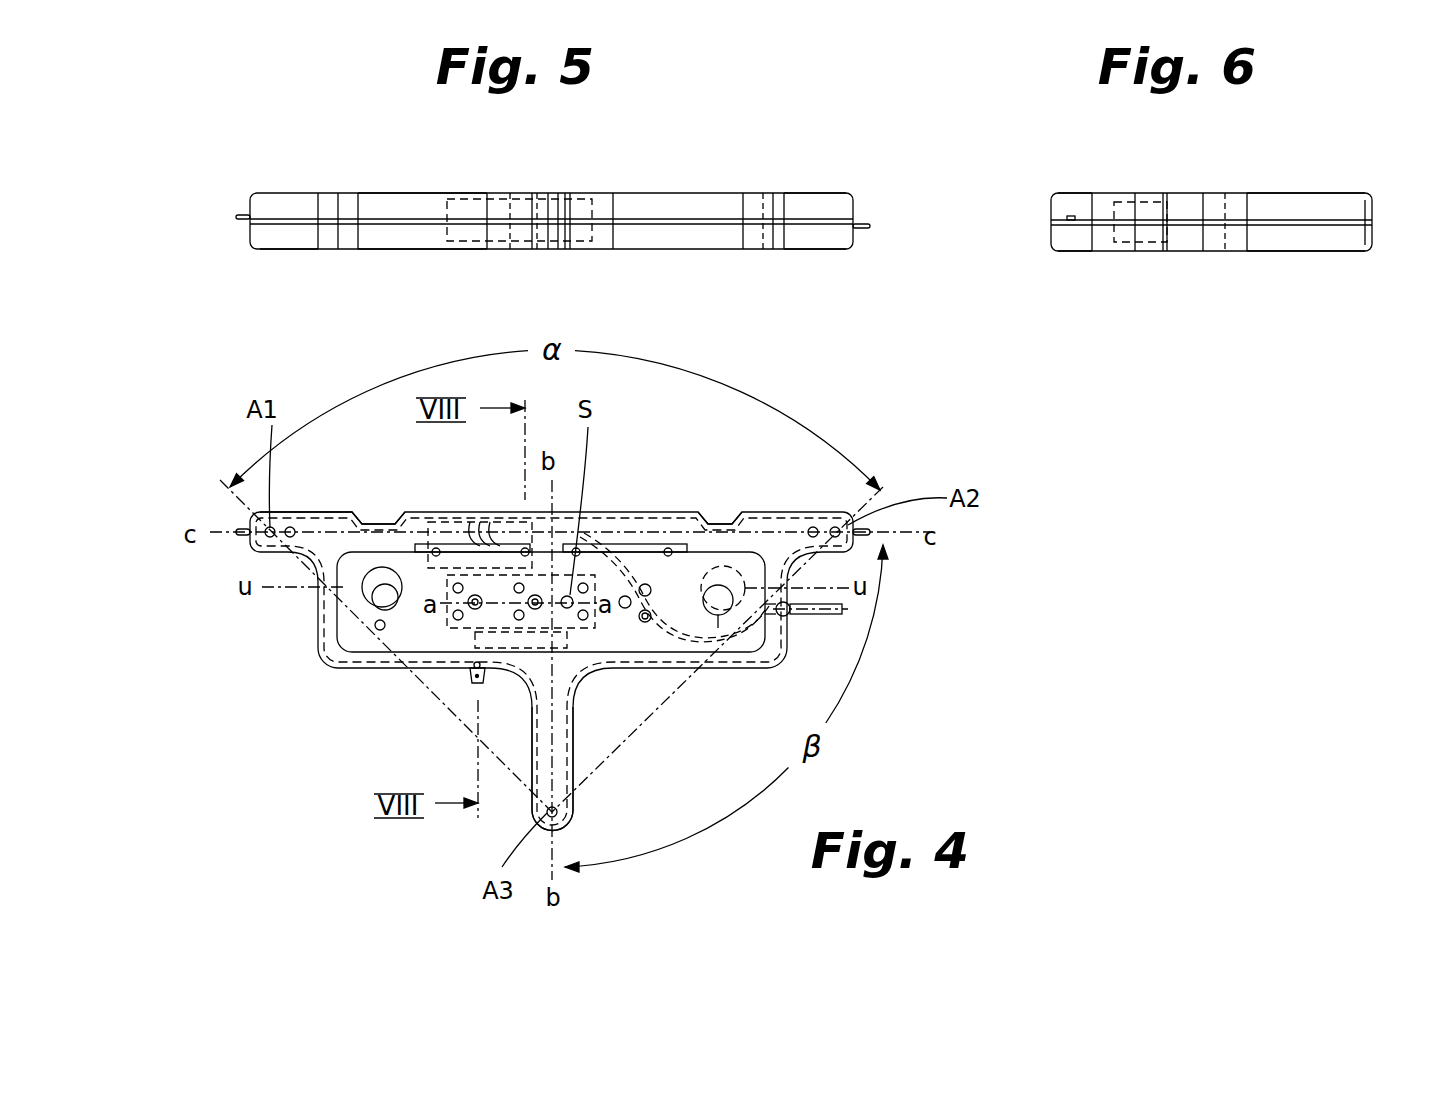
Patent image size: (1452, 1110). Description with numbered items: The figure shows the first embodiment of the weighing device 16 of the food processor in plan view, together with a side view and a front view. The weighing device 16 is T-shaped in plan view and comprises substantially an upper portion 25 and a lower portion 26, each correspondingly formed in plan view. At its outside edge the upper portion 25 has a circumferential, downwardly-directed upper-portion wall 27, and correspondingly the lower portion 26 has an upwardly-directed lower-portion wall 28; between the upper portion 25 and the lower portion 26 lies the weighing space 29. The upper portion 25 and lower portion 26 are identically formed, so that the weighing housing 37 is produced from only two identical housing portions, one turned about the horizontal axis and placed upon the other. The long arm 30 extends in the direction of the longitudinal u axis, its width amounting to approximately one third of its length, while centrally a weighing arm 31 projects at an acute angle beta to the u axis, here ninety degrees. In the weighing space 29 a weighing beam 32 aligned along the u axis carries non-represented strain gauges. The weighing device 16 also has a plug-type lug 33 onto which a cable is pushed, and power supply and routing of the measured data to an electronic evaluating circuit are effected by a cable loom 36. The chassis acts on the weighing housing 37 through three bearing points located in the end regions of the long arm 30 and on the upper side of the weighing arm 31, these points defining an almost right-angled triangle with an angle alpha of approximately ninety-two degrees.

In FIG. 5, the weighing device 16 is at (771, 173).
In FIG. 6, the weighing device 16 is at (1065, 174).
In FIG. 4, the weighing device 16 is at (768, 488).
In FIG. 5, the upper portion 25 is at (283, 203).
In FIG. 6, the upper portion 25 is at (1318, 200).
In FIG. 4, the upper portion 25 is at (335, 520).
In FIG. 5, the lower portion 26 is at (292, 235).
In FIG. 6, the lower portion 26 is at (1333, 247).
In FIG. 5, the upper-portion wall 27 is at (408, 207).
In FIG. 6, the upper-portion wall 27 is at (1260, 208).
In FIG. 4, the upper-portion wall 27 is at (613, 520).
In FIG. 5, the lower-portion wall 28 is at (410, 235).
In FIG. 6, the lower-portion wall 28 is at (1278, 235).
In FIG. 5, the weighing space 29 is at (633, 200).
In FIG. 6, the weighing space 29 is at (1180, 202).
In FIG. 4, the weighing space 29 is at (673, 523).
In FIG. 5, the long arm 30 is at (698, 238).
In FIG. 6, the long arm 30 is at (1098, 238).
In FIG. 4, the long arm 30 is at (410, 522).
In FIG. 5, the weighing arm 31 is at (555, 207).
In FIG. 6, the weighing arm 31 is at (1360, 208).
In FIG. 4, the weighing arm 31 is at (552, 747).
In FIG. 5, the weighing beam 32 is at (470, 242).
In FIG. 6, the weighing beam 32 is at (1147, 233).
In FIG. 4, the weighing beam 32 is at (515, 650).
In FIG. 4, the plug-type lug 33 is at (473, 682).
In FIG. 4, the cable loom 36 is at (817, 612).
In FIG. 5, the weighing housing 37 is at (817, 203).
In FIG. 6, the weighing housing 37 is at (1060, 207).
In FIG. 4, the weighing housing 37 is at (320, 635).